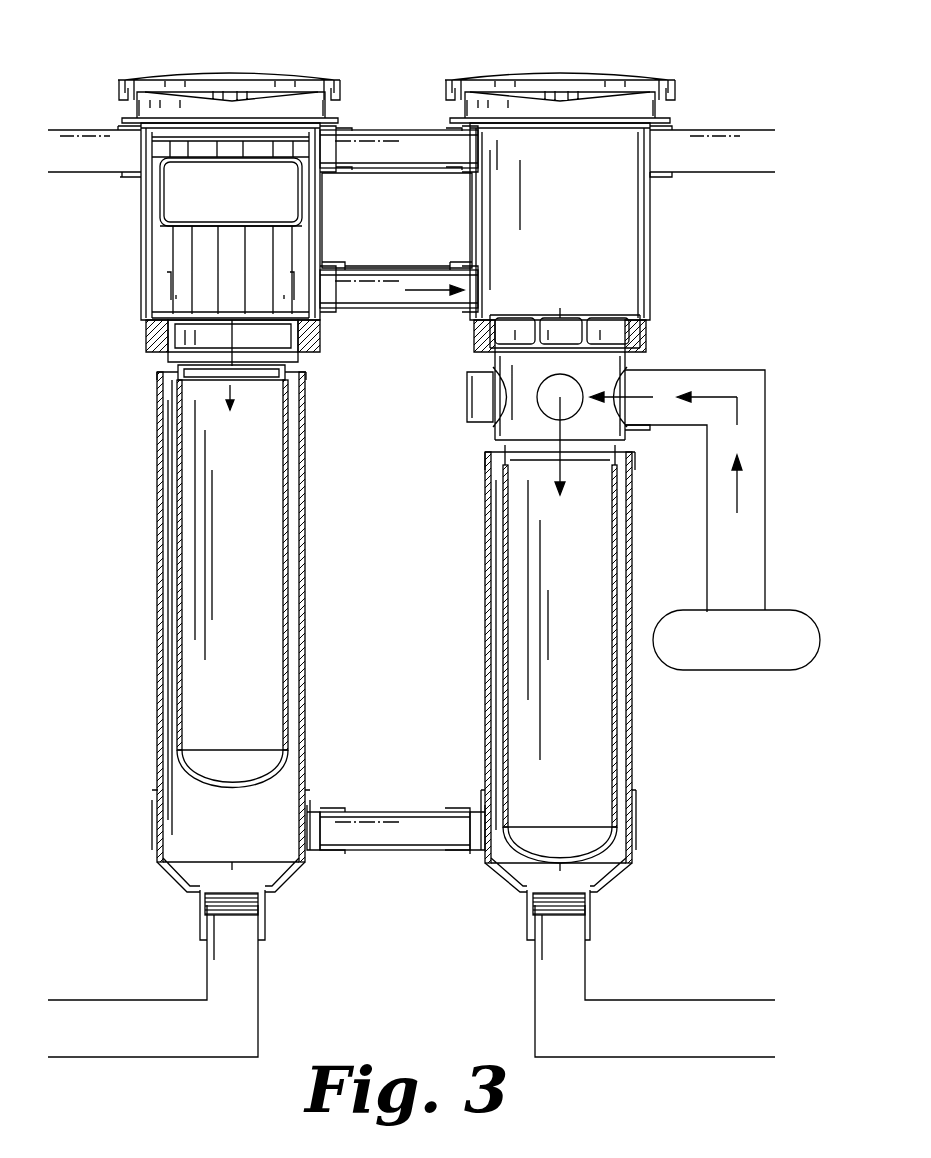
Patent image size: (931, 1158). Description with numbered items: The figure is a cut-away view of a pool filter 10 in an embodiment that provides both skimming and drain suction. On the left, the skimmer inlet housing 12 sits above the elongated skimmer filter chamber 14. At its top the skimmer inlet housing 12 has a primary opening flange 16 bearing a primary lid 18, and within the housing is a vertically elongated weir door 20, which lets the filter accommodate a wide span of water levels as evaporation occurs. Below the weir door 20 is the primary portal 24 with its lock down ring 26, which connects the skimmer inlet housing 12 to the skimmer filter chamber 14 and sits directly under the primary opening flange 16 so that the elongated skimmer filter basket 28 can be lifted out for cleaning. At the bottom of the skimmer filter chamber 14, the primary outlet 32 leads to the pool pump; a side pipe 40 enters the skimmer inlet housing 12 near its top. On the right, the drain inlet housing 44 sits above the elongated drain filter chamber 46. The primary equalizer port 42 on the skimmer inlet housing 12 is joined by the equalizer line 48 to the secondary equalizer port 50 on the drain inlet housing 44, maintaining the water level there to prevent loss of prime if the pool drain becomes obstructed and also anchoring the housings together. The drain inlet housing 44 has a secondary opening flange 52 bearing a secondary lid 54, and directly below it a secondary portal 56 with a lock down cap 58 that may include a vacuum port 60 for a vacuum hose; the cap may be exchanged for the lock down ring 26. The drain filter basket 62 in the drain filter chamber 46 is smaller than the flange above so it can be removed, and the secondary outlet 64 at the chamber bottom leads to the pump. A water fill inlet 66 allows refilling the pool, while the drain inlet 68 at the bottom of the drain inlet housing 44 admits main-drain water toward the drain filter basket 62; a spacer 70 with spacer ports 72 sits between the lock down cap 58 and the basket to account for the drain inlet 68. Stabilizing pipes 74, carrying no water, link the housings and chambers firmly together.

The pool filter 10 is at (122, 40).
The skimmer inlet housing 12 is at (141, 229).
The skimmer filter chamber 14 is at (157, 760).
The primary opening flange 16 is at (150, 108).
The primary lid 18 is at (250, 74).
The weir door 20 is at (205, 258).
The primary portal 24 is at (152, 343).
The lock down ring 26 is at (213, 330).
The skimmer filter basket 28 is at (172, 548).
The primary outlet 32 is at (200, 920).
The inlet pipe 40 is at (130, 178).
The primary equalizer port 42 is at (335, 263).
The drain inlet housing 44 is at (650, 237).
The drain filter chamber 46 is at (635, 772).
The equalizer line 48 is at (395, 266).
The secondary equalizer port 50 is at (455, 263).
The secondary opening flange 52 is at (640, 105).
The secondary lid 54 is at (590, 74).
The secondary portal 56 is at (648, 337).
The lock down cap 58 is at (597, 327).
The vacuum port 60 is at (555, 330).
The drain filter basket 62 is at (618, 703).
The secondary outlet 64 is at (592, 918).
The water fill inlet 66 is at (660, 145).
The drain inlet 68 is at (648, 430).
The spacer 70 is at (600, 380).
The spacer ports 72 is at (548, 405).
The stabilizing pipes 74 is at (397, 130).